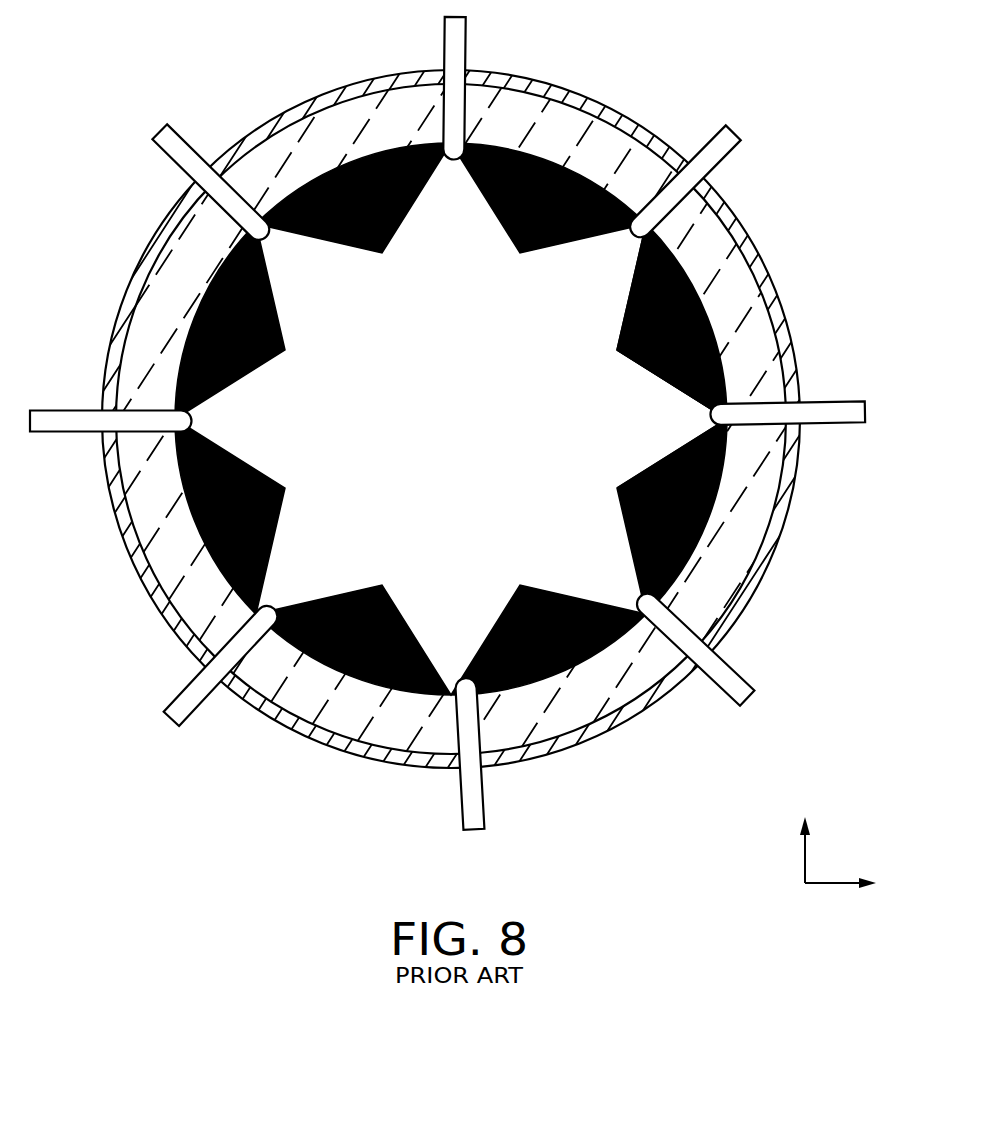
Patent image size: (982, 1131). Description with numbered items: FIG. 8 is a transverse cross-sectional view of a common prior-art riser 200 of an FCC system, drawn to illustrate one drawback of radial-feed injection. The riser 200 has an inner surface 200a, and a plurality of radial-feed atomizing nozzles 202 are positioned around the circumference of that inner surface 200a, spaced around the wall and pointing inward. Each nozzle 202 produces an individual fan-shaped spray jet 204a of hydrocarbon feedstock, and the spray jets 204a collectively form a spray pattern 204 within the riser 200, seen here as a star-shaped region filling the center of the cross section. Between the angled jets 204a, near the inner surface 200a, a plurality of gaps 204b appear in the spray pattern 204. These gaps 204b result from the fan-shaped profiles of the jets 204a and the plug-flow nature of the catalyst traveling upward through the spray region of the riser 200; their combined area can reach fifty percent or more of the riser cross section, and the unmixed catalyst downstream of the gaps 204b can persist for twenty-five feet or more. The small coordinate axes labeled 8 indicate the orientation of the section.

The riser 200 is at (588, 88).
The inner surface of the riser 200a is at (299, 651).
The radial-feed atomizing nozzles 202 is at (738, 148).
The spray pattern 204 is at (460, 503).
The spray jet 204a is at (700, 430).
The gaps 204b is at (627, 358).
The coordinate axes 8 is at (816, 886).